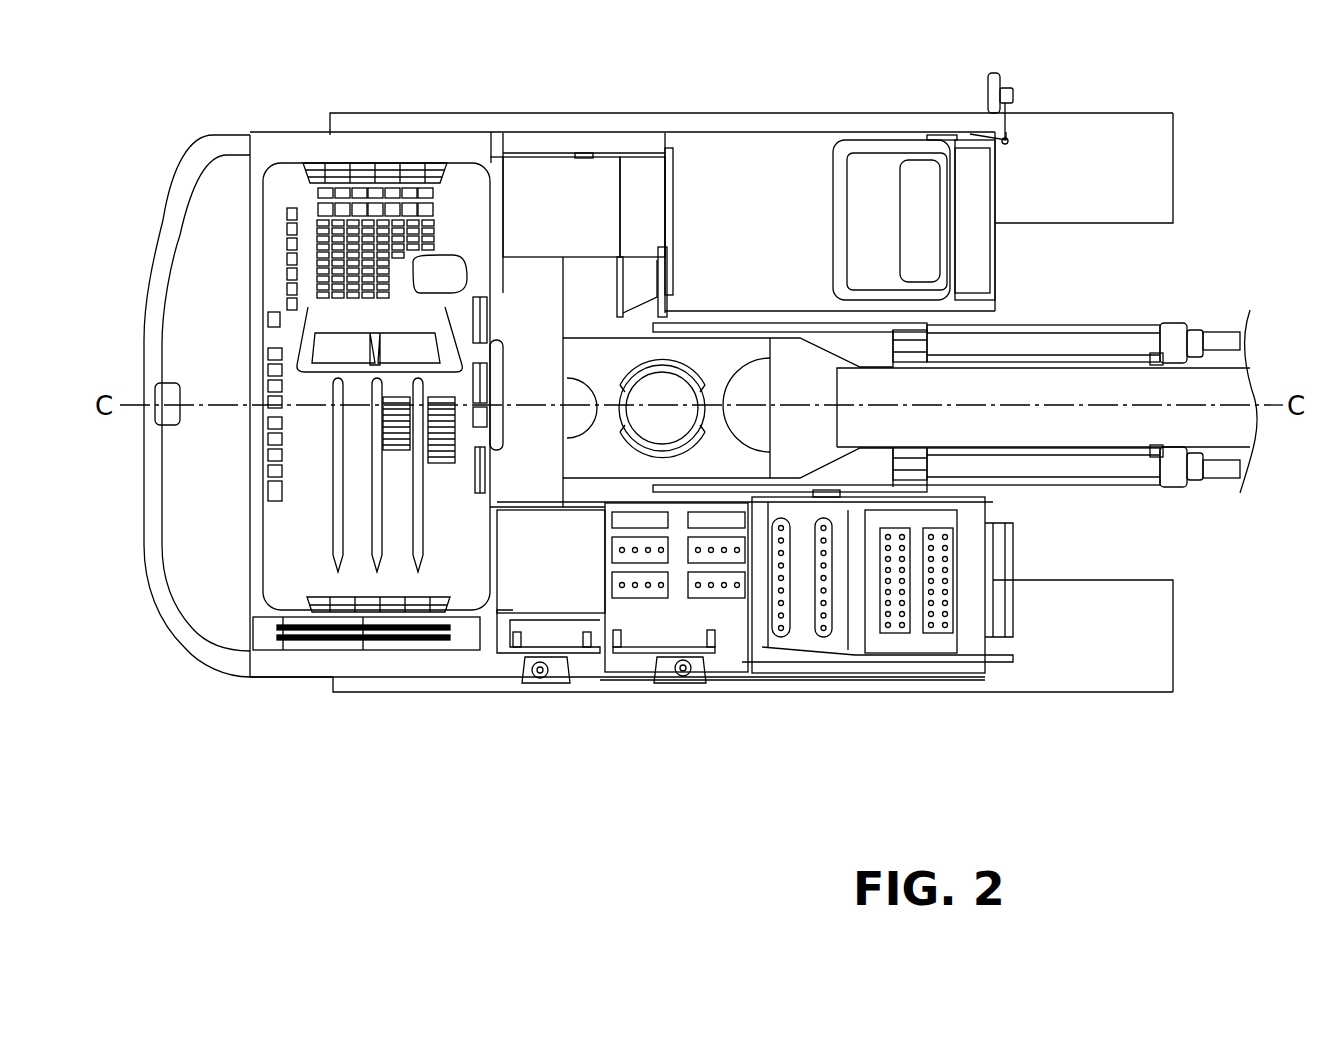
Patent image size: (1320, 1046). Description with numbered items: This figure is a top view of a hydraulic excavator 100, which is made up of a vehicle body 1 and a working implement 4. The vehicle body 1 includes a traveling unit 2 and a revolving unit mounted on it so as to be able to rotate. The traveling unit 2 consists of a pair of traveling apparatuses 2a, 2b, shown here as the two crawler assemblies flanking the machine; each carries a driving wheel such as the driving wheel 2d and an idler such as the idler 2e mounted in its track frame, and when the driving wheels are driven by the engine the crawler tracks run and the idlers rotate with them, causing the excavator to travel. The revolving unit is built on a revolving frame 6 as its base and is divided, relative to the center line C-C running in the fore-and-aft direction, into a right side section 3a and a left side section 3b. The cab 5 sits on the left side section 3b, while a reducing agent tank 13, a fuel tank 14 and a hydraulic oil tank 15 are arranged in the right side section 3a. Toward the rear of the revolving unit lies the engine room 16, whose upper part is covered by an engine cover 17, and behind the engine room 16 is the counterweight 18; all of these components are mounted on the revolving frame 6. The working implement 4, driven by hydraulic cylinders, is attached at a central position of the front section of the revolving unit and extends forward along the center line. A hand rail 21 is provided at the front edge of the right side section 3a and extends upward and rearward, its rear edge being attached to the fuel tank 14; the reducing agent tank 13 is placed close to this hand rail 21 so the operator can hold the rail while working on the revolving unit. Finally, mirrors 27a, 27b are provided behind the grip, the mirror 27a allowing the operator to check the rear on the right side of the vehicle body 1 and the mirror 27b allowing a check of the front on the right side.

The vehicle body 1 is at (368, 708).
The traveling unit 2 is at (1217, 122).
The traveling apparatus 2a is at (1182, 618).
The traveling apparatus 2b is at (1178, 167).
The driving wheel 2d is at (1078, 667).
The idler 2e is at (1113, 138).
The right side section 3a is at (1020, 537).
The left side section 3b is at (1003, 255).
The working implement 4 is at (1213, 496).
The cab 5 is at (768, 183).
The revolving frame 6 is at (641, 683).
The reducing agent tank 13 is at (803, 623).
The fuel tank 14 is at (720, 625).
The hydraulic oil tank 15 is at (547, 583).
The engine room 16 is at (440, 437).
The engine cover 17 is at (302, 507).
The counterweight 18 is at (208, 450).
The hand rail 21 is at (940, 667).
The mirror 27a is at (672, 676).
The mirror 27b is at (550, 685).
The hydraulic excavator 100 is at (1237, 693).